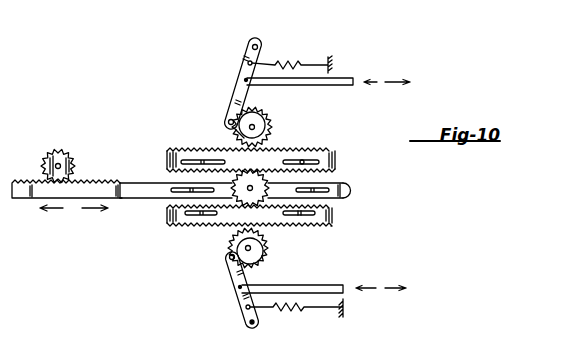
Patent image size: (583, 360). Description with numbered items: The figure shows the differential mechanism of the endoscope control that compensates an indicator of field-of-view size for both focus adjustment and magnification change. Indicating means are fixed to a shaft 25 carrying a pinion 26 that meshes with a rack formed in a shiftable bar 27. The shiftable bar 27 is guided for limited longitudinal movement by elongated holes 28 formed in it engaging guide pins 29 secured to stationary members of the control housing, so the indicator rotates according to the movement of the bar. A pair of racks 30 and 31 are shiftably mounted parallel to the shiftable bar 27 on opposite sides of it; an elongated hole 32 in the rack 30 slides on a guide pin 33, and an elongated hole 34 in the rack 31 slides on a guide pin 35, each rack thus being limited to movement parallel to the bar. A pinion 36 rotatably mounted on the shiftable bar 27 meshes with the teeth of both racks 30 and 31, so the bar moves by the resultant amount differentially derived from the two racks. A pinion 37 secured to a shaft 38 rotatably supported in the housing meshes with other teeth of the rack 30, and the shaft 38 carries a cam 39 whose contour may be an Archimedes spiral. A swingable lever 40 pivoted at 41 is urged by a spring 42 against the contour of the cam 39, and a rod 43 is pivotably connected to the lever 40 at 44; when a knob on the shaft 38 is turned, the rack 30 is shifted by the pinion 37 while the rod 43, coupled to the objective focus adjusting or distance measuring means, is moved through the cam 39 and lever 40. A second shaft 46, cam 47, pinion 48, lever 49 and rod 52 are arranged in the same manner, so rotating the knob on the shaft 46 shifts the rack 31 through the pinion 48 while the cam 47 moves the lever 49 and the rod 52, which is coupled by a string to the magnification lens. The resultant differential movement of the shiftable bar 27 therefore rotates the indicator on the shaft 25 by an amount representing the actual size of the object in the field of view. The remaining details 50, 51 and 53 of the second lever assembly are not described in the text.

The shaft 25 is at (52, 164).
The pinion 26 is at (68, 158).
The shiftable bar 27 is at (152, 183).
The elongated holes 28 is at (323, 188).
The guide pins 29 is at (336, 197).
The rack 30 is at (335, 160).
The rack 31 is at (336, 215).
The elongated hole 32 is at (318, 151).
The guide pin 33 is at (303, 160).
The elongated hole 34 is at (328, 223).
The guide pin 35 is at (297, 218).
The pinion 36 is at (235, 210).
The pinion 37 is at (270, 129).
The shaft 38 is at (229, 130).
The cam 39 is at (262, 112).
The swingable lever 40 is at (238, 90).
The pivot 41 is at (258, 43).
The spring 42 is at (289, 63).
The rod 43 is at (346, 78).
The pivot connection 44 is at (247, 63).
The shaft 46 is at (236, 268).
The cam 47 is at (266, 256).
The pinion 48 is at (230, 258).
The lever 49 is at (246, 318).
The pivot hole 50 is at (255, 326).
The return spring 51 is at (290, 311).
The rod 52 is at (337, 285).
The spring anchor pin 53 is at (237, 301).